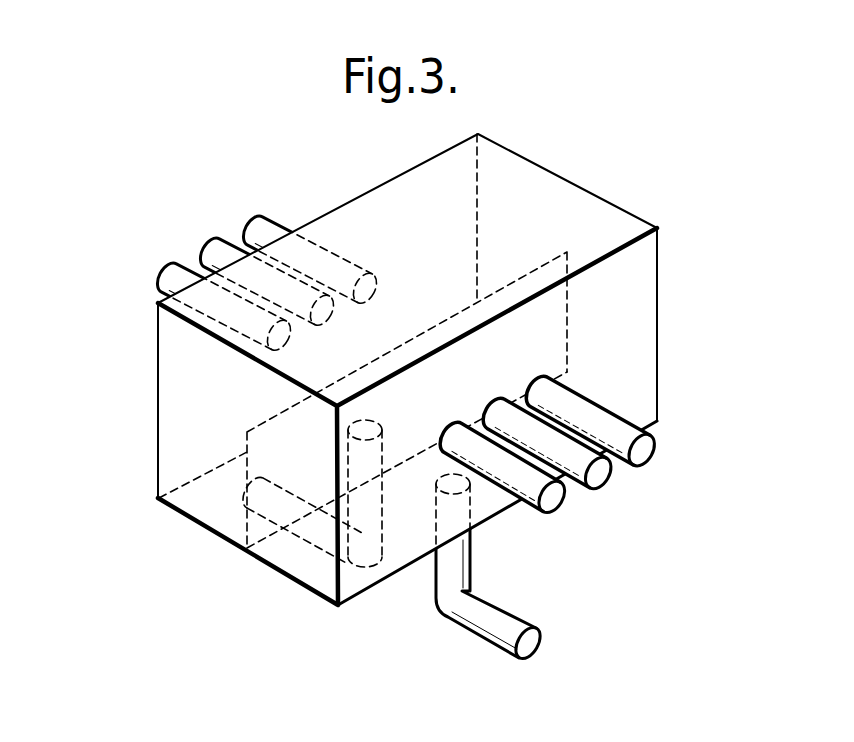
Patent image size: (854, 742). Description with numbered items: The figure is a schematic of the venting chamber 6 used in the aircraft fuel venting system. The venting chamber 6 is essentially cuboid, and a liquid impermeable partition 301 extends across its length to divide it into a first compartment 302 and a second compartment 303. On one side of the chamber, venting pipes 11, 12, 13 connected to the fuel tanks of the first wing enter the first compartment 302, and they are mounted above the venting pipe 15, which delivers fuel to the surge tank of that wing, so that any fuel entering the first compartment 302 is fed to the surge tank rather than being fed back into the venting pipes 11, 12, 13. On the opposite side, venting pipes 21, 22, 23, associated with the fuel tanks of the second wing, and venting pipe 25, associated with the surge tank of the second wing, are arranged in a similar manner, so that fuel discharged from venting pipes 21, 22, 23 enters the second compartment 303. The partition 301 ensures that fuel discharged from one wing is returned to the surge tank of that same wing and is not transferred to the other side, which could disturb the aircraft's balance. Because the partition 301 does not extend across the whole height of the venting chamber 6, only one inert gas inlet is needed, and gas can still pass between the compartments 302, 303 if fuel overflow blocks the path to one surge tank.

The venting chamber 6 is at (543, 188).
The venting pipe 21 is at (259, 226).
The venting pipe 22 is at (213, 250).
The venting pipe 23 is at (173, 278).
The venting pipe 11 is at (653, 453).
The venting pipe 12 is at (604, 481).
The venting pipe 13 is at (557, 508).
The venting pipe 15 is at (507, 630).
The venting pipe 25 is at (382, 527).
The liquid impermeable partition 301 is at (250, 513).
The first compartment 302 is at (300, 560).
The second compartment 303 is at (204, 458).